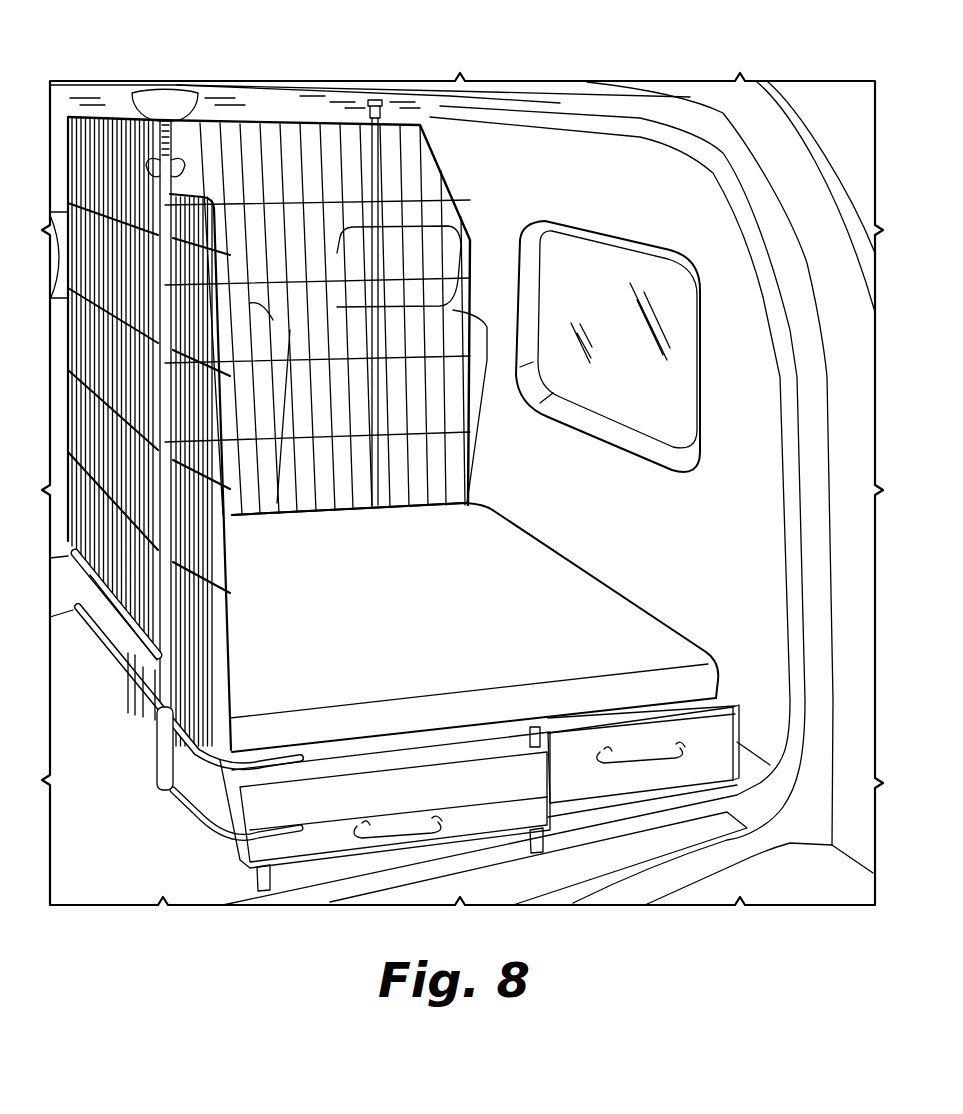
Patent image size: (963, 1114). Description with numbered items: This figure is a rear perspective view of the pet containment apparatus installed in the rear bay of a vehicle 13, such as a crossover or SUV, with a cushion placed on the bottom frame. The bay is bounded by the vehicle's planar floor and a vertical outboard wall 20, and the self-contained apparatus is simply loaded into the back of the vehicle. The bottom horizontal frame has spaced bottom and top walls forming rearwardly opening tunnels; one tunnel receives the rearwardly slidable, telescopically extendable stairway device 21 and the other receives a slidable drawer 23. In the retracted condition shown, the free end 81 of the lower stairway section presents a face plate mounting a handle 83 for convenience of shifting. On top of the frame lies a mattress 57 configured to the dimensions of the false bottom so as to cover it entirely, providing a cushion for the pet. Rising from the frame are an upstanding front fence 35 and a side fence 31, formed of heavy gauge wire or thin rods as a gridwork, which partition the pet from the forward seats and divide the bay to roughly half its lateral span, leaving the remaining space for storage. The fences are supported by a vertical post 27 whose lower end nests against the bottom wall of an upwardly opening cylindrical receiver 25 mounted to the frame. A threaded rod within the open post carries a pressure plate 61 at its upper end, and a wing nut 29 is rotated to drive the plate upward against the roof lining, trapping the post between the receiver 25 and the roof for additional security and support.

The vehicle 13 is at (121, 852).
The vertical outboard wall 20 is at (732, 564).
The stairway device 21 is at (471, 774).
The drawer 23 is at (740, 720).
The cylindrical receiver 25 is at (157, 732).
The vertical post 27 is at (158, 667).
The wing nut 29 is at (190, 176).
The side fence 31 is at (232, 597).
The front fence 35 is at (453, 185).
The mattress 57 is at (587, 610).
The pressure plate 61 is at (145, 92).
The free end of lower stairway section 81 is at (393, 807).
The handle 83 is at (400, 833).